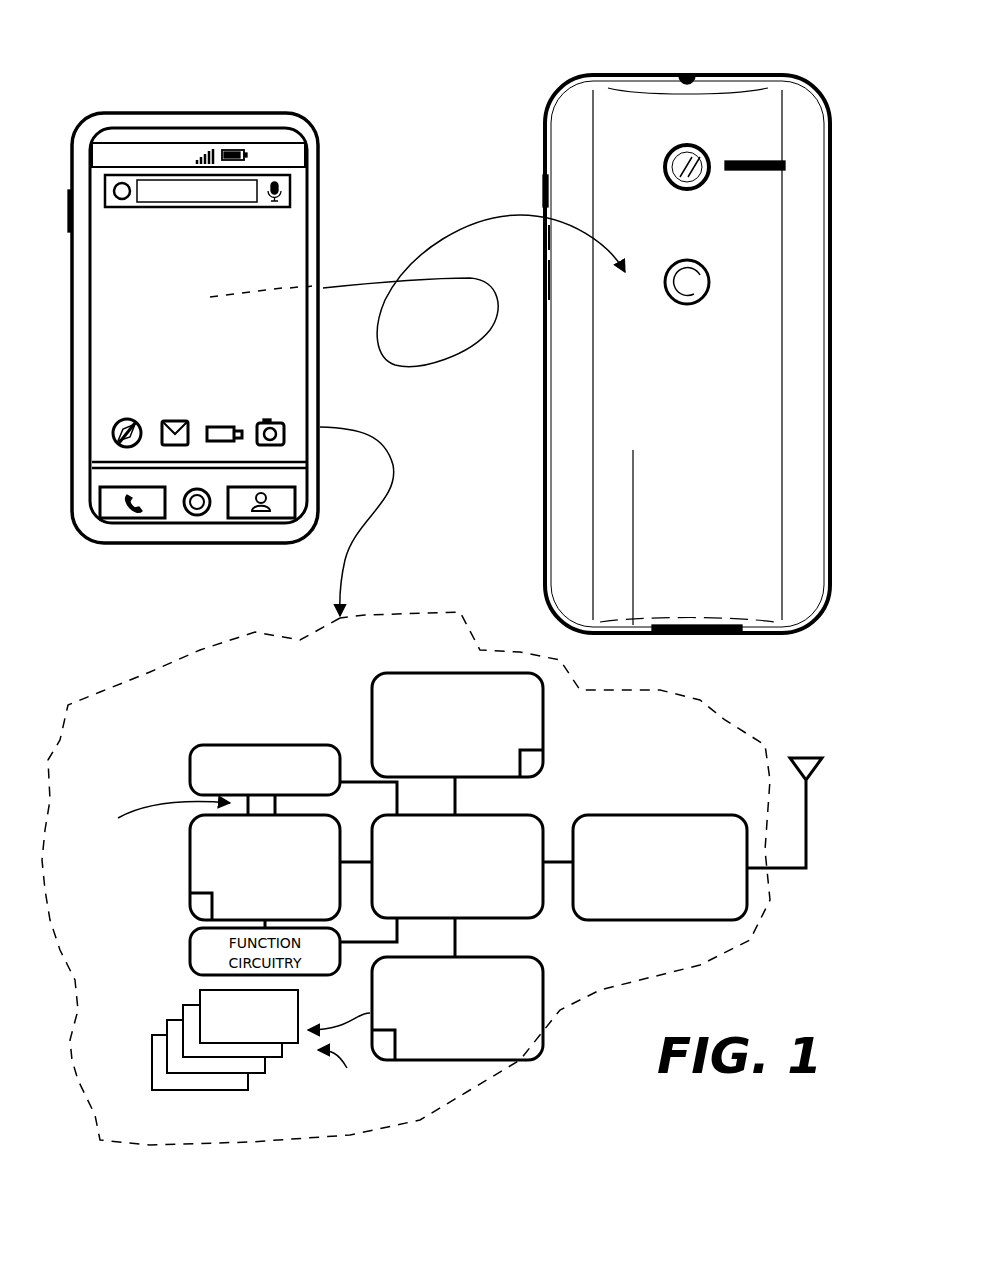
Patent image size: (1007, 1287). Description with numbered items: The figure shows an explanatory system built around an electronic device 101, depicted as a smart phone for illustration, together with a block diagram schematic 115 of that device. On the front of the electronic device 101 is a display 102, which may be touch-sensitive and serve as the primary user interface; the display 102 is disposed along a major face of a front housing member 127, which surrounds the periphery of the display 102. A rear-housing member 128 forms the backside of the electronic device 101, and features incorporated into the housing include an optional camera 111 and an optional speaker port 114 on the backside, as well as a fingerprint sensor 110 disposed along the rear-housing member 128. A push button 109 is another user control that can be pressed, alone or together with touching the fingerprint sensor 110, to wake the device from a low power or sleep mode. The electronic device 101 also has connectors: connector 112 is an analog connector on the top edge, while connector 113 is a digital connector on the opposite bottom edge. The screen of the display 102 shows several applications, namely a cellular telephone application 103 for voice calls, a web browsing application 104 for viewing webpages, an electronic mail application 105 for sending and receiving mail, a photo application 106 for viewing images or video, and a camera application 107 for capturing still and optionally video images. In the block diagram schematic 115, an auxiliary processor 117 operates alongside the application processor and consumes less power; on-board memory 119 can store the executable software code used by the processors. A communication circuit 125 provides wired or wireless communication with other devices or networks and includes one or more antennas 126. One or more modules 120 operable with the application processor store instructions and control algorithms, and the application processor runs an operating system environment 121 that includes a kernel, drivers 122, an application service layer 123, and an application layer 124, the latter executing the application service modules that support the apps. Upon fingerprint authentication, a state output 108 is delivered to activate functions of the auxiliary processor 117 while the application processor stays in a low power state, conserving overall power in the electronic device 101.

The electronic device 101 is at (329, 515).
The display 102 is at (262, 229).
The cellular telephone application 103 is at (142, 497).
The web browsing application 104 is at (127, 418).
The electronic mail application 105 is at (174, 418).
The photo application 106 is at (218, 426).
The camera application 107 is at (270, 418).
The state output 108 is at (545, 1002).
The push button 109 is at (545, 203).
The fingerprint sensor 110 is at (708, 290).
The camera 111 is at (676, 147).
The connector 112 is at (688, 73).
The connector 113 is at (708, 634).
The speaker port 114 is at (769, 172).
The block diagram schematic 115 is at (768, 742).
The auxiliary processor 117 is at (189, 866).
The on-board memory 119 is at (197, 903).
The modules 120 is at (339, 1050).
The operating system environment 121 is at (200, 1000).
The drivers 122 is at (274, 1058).
The application service layer 123 is at (182, 1028).
The application layer 124 is at (150, 1070).
The communication circuit 125 is at (648, 815).
The antennas 126 is at (810, 795).
The front housing member 127 is at (73, 378).
The rear-housing member 128 is at (805, 193).